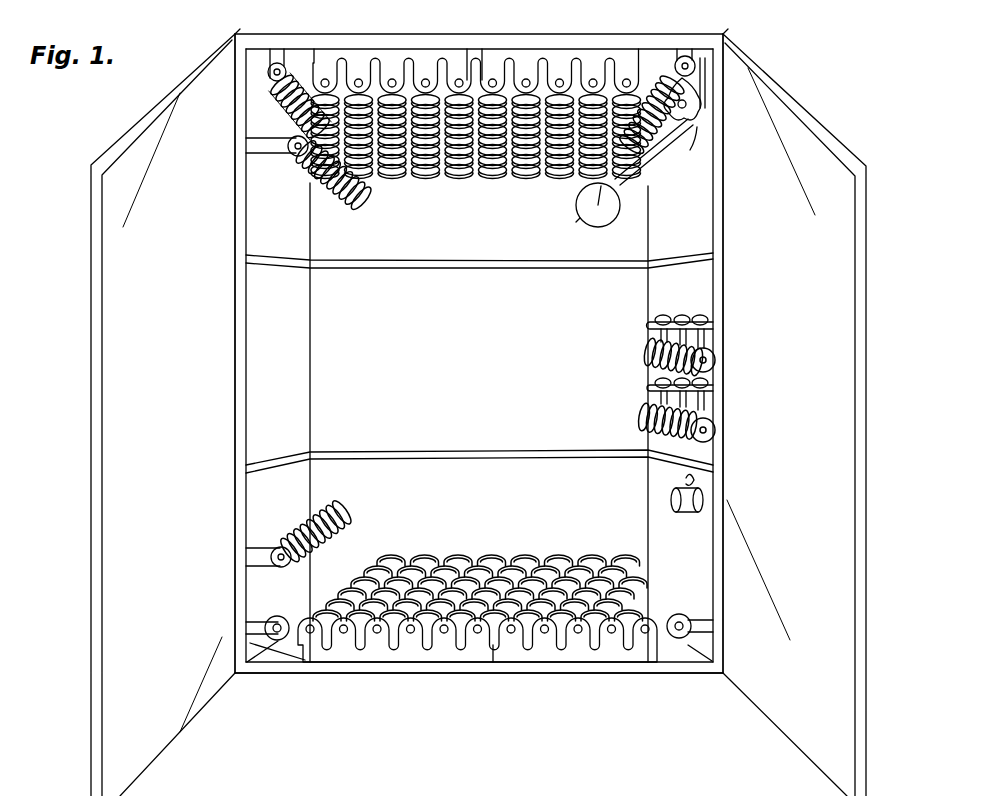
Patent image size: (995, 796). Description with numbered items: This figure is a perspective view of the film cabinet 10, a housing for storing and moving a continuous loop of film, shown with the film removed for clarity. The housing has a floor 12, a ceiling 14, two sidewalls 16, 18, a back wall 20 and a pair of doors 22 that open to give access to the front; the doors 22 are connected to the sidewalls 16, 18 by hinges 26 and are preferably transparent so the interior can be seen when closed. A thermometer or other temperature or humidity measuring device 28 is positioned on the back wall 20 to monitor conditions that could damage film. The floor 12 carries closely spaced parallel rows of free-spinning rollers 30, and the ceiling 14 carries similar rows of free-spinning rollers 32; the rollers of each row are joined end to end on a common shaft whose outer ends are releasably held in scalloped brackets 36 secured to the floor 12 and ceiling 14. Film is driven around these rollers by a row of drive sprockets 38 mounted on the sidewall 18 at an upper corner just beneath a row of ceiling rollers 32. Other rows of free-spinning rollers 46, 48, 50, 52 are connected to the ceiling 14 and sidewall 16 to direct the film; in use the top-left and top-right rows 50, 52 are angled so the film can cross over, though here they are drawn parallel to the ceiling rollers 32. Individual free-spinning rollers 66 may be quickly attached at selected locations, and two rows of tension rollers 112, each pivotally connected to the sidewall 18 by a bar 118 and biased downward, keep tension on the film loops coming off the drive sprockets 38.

The film cabinet 10 is at (351, 732).
The floor 12 is at (474, 676).
The ceiling 14 is at (480, 32).
The sidewall 16 is at (290, 334).
The sidewall 18 is at (660, 274).
The back wall 20 is at (490, 386).
The doors 22 is at (148, 764).
The hinges 26 is at (237, 34).
The temperature or humidity measuring device 28 is at (580, 216).
The free-spinning rollers 30 is at (378, 555).
The free-spinning rollers 32 is at (412, 174).
The scalloped brackets 36 is at (382, 66).
The drive sprockets 38 is at (656, 133).
The free-spinning rollers 46 is at (348, 502).
The free-spinning rollers 48 is at (362, 200).
The free-spinning rollers 50 is at (286, 65).
The free-spinning rollers 52 is at (668, 42).
The free-spinning roller 66 is at (668, 500).
The tension rollers 112 is at (642, 346).
The bar 118 is at (648, 318).